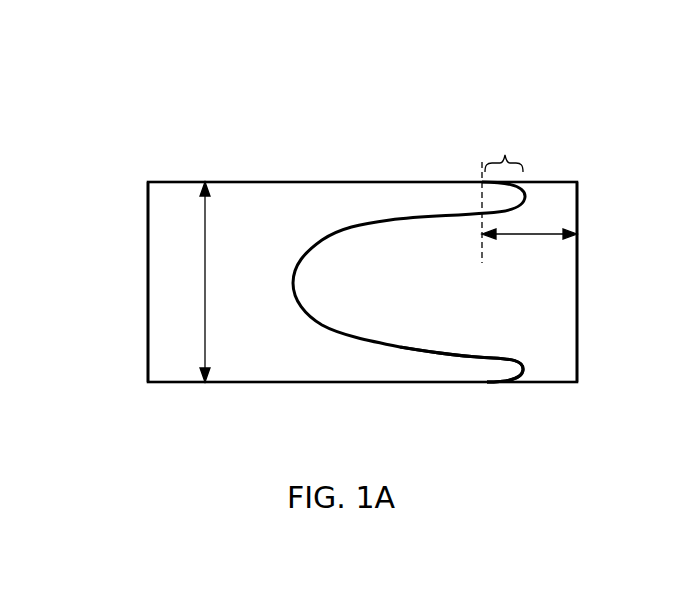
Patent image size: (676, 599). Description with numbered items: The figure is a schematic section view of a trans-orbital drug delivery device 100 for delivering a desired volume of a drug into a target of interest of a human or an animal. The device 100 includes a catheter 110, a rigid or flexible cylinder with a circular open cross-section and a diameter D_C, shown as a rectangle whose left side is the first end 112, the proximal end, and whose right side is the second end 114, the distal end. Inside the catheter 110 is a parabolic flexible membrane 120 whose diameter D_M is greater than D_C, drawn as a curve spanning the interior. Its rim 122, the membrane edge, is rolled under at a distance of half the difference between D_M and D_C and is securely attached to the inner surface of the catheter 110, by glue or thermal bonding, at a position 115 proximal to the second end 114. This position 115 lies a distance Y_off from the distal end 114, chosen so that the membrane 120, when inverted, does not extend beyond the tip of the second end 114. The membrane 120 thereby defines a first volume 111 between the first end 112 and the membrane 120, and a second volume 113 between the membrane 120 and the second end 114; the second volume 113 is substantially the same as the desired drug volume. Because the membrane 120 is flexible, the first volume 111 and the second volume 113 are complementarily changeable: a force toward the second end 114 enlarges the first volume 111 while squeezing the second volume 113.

The trans-orbital drug delivery device 100 is at (328, 38).
The catheter 110 is at (295, 182).
The first volume 111 is at (274, 345).
The first end 112 is at (148, 210).
The second volume 113 is at (512, 306).
The second end 114 is at (577, 208).
The position 115 is at (483, 382).
The flexible membrane 120 is at (390, 220).
The rim 122 is at (483, 382).